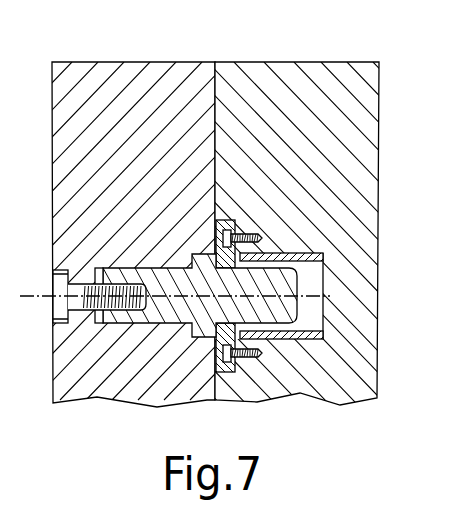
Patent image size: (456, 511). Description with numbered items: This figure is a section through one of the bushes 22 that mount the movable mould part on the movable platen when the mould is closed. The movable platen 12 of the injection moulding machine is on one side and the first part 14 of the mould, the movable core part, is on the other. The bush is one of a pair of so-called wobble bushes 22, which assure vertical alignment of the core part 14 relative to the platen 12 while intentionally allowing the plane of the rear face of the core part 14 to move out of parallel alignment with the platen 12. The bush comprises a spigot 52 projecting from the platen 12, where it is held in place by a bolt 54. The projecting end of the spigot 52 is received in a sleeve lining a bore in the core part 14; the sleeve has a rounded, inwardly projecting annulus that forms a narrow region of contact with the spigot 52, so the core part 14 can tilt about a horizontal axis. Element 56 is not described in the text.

The movable platen 12 is at (113, 88).
The first part 14 is at (273, 85).
The bushes 22 is at (242, 203).
The spigot 52 is at (155, 272).
The bolt 54 is at (62, 303).
The retaining bracket 56 is at (311, 252).